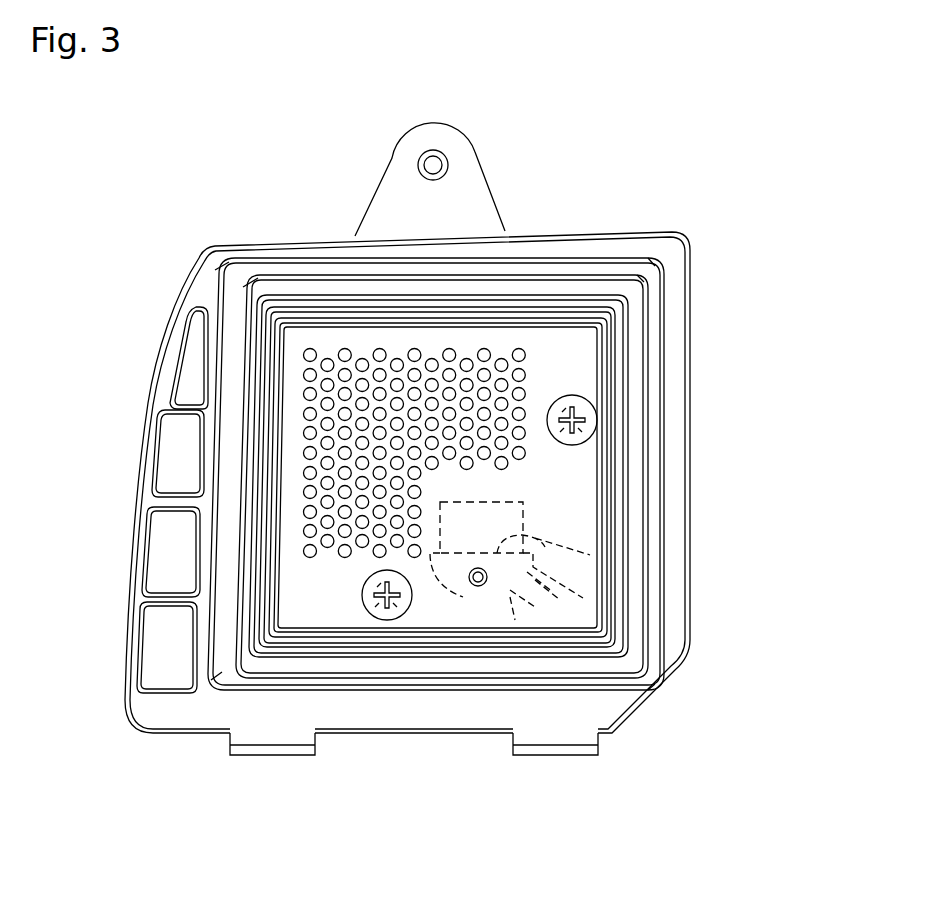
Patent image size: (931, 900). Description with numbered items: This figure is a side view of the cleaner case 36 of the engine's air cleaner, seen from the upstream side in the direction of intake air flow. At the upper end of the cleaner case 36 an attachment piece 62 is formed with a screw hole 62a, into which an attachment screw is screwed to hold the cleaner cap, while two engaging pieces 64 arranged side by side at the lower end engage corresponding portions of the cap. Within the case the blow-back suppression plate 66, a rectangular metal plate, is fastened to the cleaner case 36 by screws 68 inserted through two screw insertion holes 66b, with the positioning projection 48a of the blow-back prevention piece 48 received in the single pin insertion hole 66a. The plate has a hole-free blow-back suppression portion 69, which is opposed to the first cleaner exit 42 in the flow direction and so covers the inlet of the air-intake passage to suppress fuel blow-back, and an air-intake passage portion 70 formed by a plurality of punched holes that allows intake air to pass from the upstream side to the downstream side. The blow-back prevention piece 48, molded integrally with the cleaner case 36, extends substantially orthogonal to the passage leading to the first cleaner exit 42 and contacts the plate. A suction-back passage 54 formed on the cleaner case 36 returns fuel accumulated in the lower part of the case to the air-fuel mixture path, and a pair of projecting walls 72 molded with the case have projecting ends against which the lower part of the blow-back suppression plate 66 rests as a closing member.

The cleaner case 36 is at (691, 230).
The first cleaner exit 42 is at (603, 560).
The blow-back prevention piece 48 is at (515, 620).
The positioning projection 48a is at (480, 586).
The suction-back passage 54 is at (640, 640).
The attachment piece 62 is at (473, 192).
The screw hole 62a is at (450, 163).
The engaging pieces 64 is at (243, 751).
The blow-back suppression plate 66 is at (292, 586).
The pin insertion hole 66a is at (475, 586).
The screw insertion holes 66b is at (608, 432).
The screws 68 is at (590, 410).
The blow-back suppression portion 69 is at (543, 520).
The air-intake passage portion 70 is at (337, 341).
The projecting walls 72 is at (600, 600).